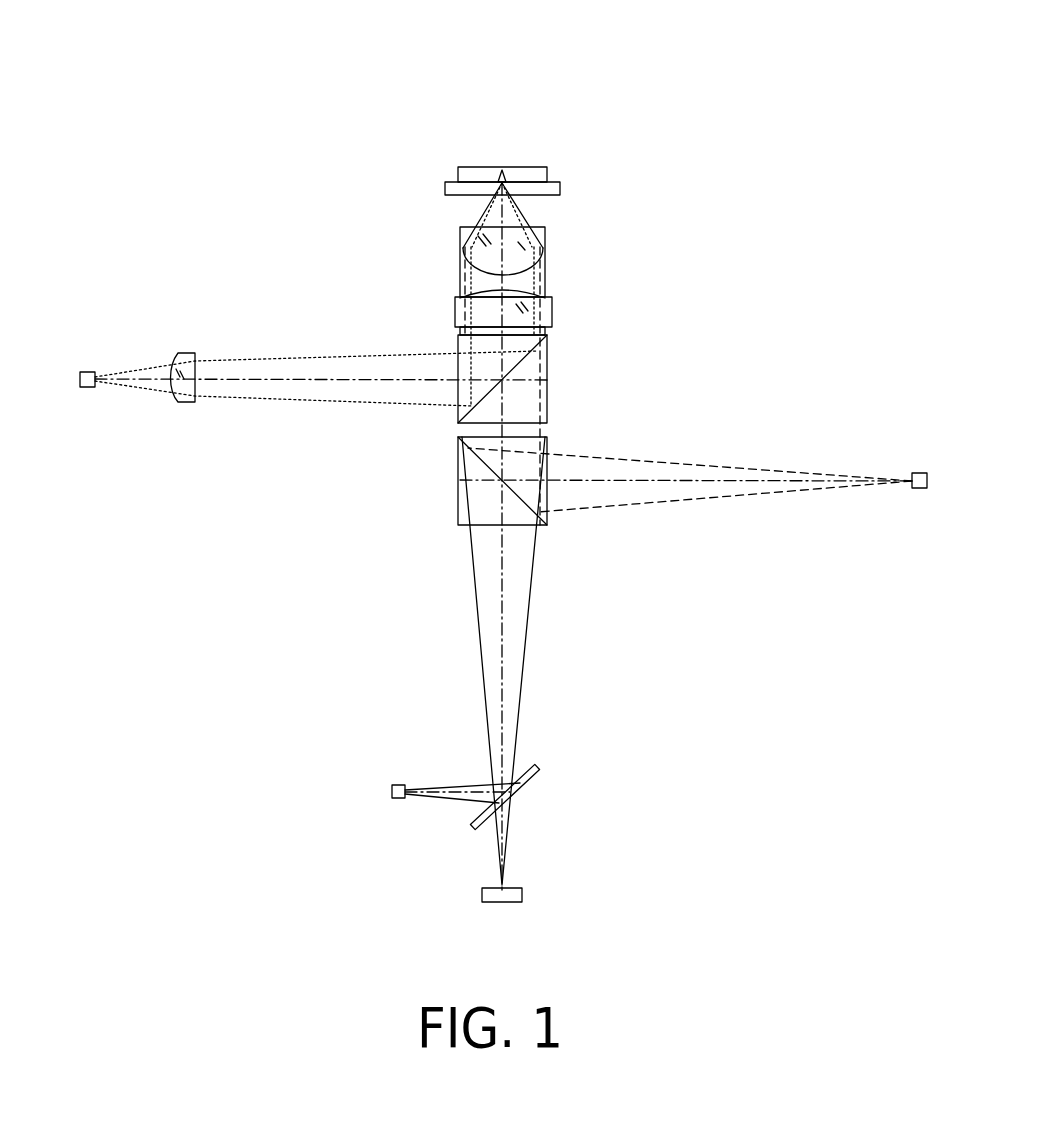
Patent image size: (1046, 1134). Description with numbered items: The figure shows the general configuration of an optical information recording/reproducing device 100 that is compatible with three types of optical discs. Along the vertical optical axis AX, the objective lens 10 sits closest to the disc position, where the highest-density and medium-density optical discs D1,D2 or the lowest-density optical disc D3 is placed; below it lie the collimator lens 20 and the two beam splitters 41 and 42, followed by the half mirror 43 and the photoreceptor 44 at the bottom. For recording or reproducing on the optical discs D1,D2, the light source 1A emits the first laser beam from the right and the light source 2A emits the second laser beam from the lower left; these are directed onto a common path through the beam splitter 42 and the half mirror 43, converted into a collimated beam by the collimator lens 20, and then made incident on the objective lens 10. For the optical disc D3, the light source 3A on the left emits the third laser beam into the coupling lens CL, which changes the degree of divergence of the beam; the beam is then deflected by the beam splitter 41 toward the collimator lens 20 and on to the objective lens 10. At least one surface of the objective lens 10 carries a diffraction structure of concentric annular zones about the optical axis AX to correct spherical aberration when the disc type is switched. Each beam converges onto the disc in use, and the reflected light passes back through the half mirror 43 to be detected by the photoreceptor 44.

The optical information recording/reproducing device 100 is at (384, 79).
The optical axis AX is at (505, 218).
The optical disc D3 is at (488, 166).
The optical discs D1 and D2 D1,D2 is at (560, 188).
The objective lens 10 is at (525, 252).
The collimator lens 20 is at (482, 302).
The beam splitter 41 is at (548, 375).
The beam splitter 42 is at (458, 487).
The half mirror 43 is at (530, 779).
The photoreceptor 44 is at (557, 903).
The light source 1A is at (917, 472).
The light source 2A is at (390, 793).
The light source 3A is at (92, 372).
The coupling lens CL is at (190, 403).